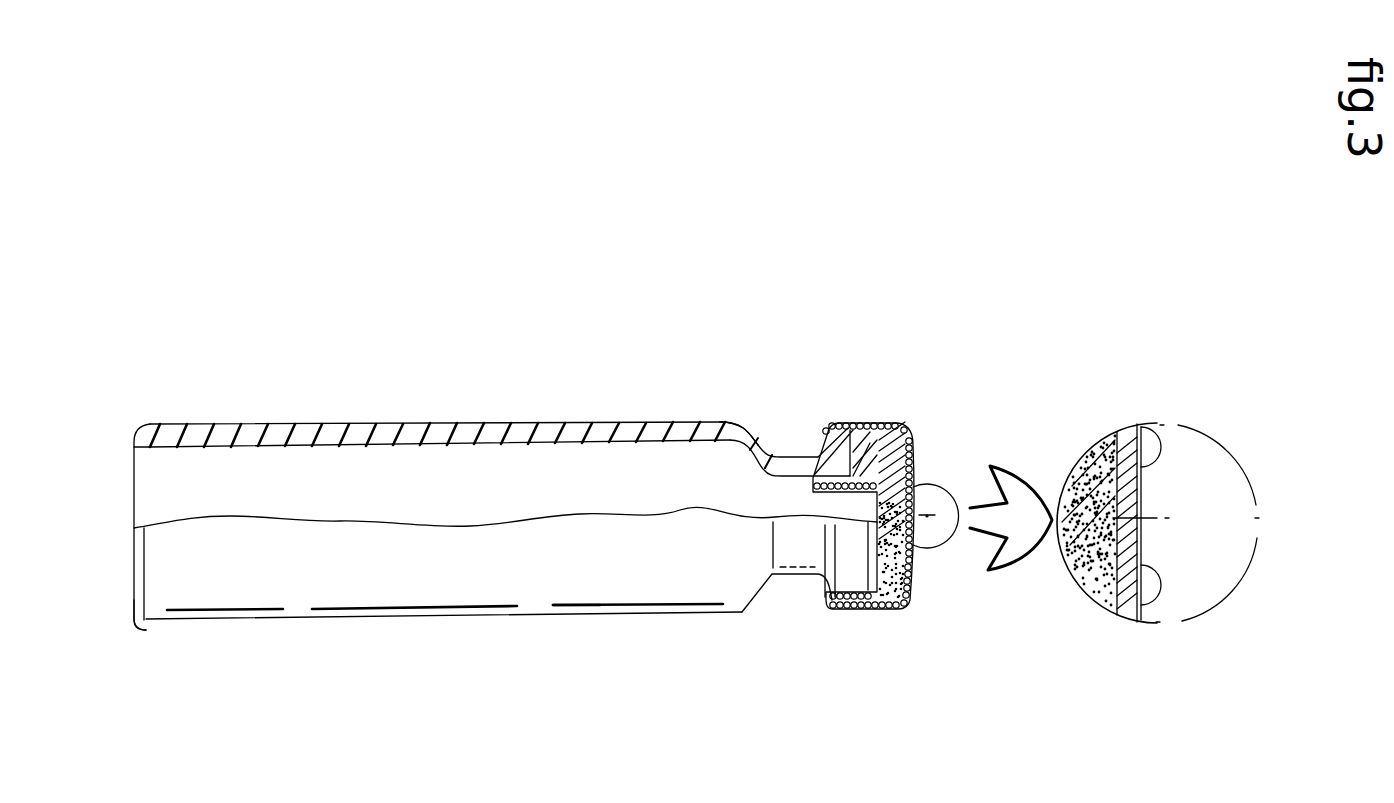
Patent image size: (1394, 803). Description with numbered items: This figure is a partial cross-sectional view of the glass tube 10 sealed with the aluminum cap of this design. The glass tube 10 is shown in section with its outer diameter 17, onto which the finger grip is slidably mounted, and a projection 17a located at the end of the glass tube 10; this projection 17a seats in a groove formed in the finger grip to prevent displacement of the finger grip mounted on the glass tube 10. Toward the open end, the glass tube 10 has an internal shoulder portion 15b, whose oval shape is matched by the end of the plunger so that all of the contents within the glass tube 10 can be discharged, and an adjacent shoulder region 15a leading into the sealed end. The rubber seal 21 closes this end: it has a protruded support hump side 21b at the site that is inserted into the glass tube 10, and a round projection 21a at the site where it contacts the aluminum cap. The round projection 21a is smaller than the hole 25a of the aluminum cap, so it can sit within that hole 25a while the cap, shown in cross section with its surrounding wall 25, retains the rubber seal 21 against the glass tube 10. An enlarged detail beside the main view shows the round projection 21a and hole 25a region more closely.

The glass tube 10 is at (601, 423).
The lower shoulder portion 15a is at (743, 608).
The internal shoulder portion 15b is at (733, 444).
The outer diameter 17 is at (552, 615).
The projection 17a is at (145, 628).
The rubber seal 21 is at (857, 610).
The round projection 21a is at (1162, 432).
The protruded support hump side 21b is at (844, 471).
The sealing layer 25 is at (903, 610).
The hole 25a is at (1145, 621).